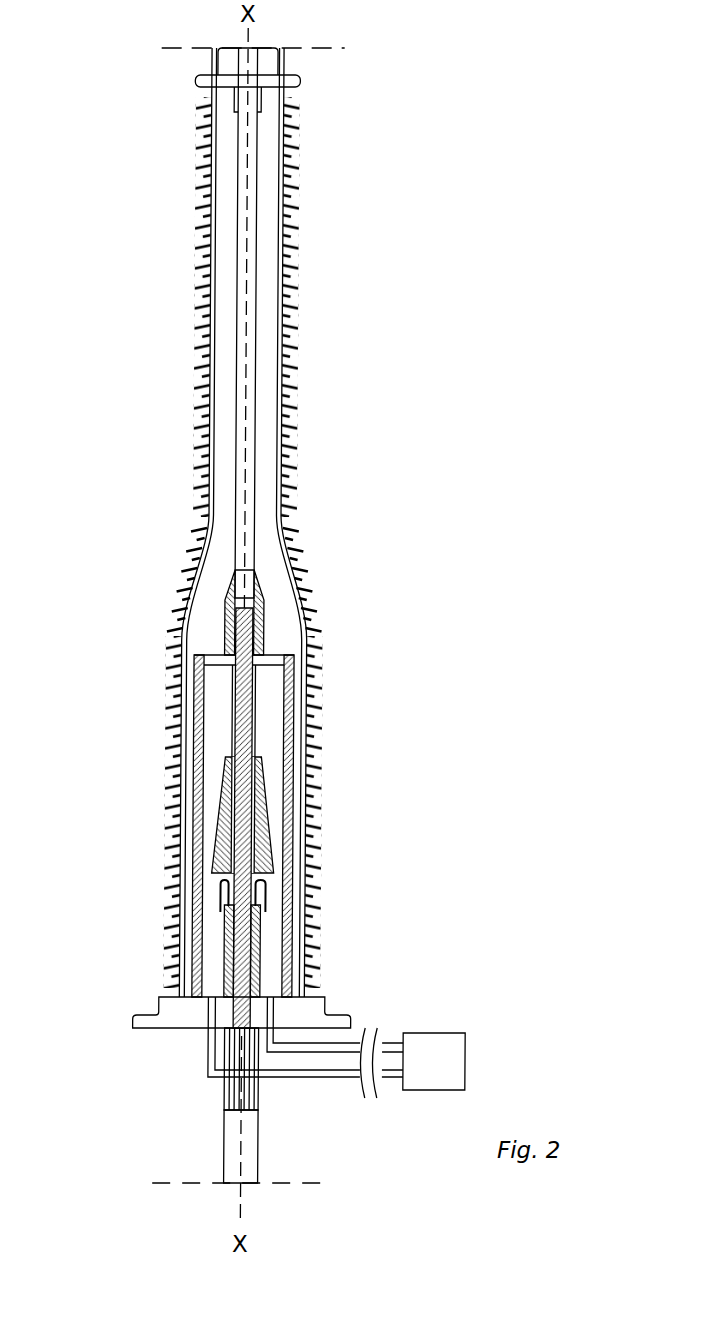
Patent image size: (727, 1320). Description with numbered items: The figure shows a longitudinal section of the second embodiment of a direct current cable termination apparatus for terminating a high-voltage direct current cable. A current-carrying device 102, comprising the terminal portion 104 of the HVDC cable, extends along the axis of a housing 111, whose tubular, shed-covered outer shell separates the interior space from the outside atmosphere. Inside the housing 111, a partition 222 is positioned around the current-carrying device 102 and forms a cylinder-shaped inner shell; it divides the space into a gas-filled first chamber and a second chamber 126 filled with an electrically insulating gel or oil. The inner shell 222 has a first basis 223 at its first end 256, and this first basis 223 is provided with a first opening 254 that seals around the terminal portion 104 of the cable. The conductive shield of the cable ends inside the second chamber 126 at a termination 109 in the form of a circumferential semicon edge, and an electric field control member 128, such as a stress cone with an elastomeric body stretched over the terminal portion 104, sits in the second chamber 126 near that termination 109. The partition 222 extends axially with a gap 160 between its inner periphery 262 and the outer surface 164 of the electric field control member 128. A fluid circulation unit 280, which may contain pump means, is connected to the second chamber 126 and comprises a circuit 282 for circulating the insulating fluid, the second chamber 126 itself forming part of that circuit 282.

The housing 111 is at (152, 382).
The current-carrying device 102 is at (268, 700).
The first opening 254 is at (226, 648).
The first basis 223 is at (215, 655).
The first end 256 is at (180, 643).
The terminal portion 104 is at (214, 705).
The partition 222 is at (198, 741).
The gap 160 is at (212, 825).
The outer surface 164 is at (215, 852).
The second chamber 126 is at (212, 943).
The inner periphery 262 is at (207, 983).
The electric field control member 128 is at (271, 823).
The termination 109 is at (270, 923).
The fluid circulation unit 280 is at (412, 1013).
The circuit 282 is at (336, 1066).